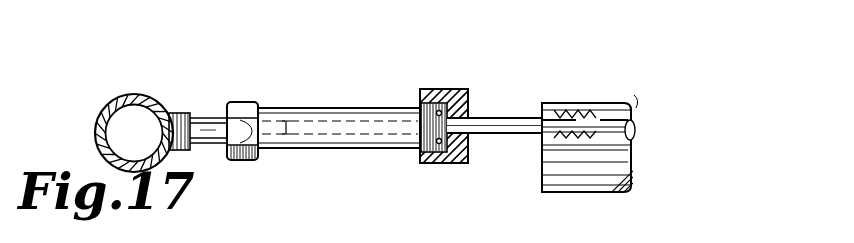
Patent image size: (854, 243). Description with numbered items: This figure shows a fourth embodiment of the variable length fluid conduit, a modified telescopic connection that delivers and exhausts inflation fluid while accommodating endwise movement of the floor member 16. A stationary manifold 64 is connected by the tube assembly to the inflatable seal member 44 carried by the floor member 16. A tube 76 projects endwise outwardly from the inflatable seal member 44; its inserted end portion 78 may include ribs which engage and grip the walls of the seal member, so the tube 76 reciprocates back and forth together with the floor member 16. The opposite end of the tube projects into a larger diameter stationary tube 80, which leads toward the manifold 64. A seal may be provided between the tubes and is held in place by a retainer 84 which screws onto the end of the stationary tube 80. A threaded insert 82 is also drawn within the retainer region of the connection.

The manifold 64 is at (100, 113).
The stationary tube 80 is at (322, 149).
The threaded insert 82 is at (413, 151).
The retainer 84 is at (470, 164).
The tube 76 is at (485, 118).
The inserted end portion 78 is at (573, 103).
The floor member 16 is at (607, 107).
The inflatable seal member 44 is at (642, 113).